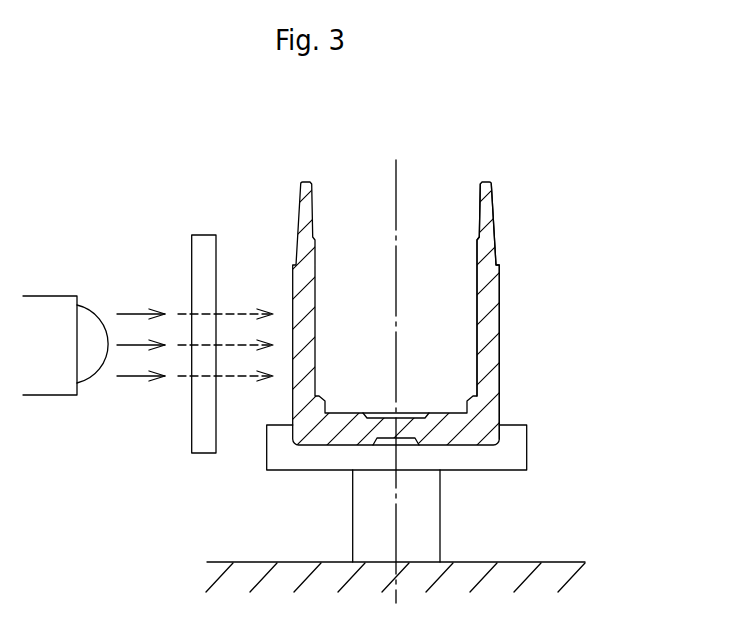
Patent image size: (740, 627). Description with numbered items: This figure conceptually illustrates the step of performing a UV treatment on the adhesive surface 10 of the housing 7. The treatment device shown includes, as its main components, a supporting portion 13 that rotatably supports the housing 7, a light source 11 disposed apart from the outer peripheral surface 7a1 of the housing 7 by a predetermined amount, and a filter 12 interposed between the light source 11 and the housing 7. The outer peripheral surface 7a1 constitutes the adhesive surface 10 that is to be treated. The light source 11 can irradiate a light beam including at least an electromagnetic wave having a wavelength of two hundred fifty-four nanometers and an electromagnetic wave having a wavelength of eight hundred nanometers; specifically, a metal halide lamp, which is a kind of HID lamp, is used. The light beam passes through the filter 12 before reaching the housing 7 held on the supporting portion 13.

The housing 7 is at (510, 190).
The outer peripheral surface 7a1 is at (500, 310).
The adhesive surface 10 is at (557, 290).
The light source 11 is at (50, 290).
The filter 12 is at (183, 257).
The supporting portion 13 is at (447, 512).